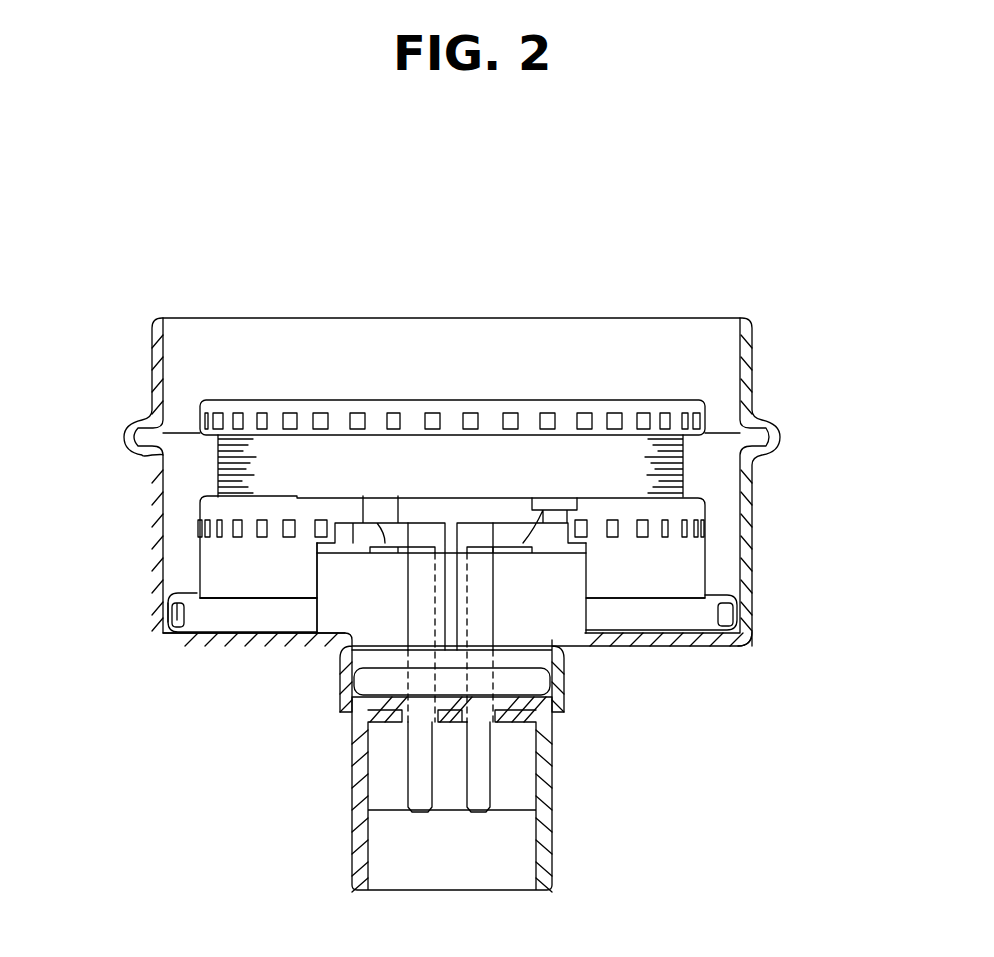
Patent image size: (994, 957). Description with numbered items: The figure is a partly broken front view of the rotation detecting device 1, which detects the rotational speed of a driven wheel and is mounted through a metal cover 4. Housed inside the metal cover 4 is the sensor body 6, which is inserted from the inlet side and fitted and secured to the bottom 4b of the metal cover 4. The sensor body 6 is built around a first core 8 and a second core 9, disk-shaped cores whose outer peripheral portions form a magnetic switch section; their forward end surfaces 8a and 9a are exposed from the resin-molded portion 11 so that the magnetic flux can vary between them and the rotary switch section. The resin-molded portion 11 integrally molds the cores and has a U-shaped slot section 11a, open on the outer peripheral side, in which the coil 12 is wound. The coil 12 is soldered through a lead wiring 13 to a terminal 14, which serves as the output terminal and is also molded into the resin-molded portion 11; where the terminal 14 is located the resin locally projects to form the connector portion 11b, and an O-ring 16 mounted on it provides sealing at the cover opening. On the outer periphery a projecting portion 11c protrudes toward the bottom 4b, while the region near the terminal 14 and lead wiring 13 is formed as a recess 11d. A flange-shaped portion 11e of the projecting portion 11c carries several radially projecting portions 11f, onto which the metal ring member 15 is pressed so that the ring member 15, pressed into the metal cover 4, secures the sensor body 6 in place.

The rotation detecting device 1 is at (790, 350).
The metal cover 4 is at (753, 386).
The bottom of the metal cover 4b is at (290, 647).
The sensor body 6 is at (188, 512).
The first core 8 is at (648, 405).
The forward end surface of the first core 8a is at (614, 413).
The second core 9 is at (718, 600).
The forward end surface of the second core 9a is at (654, 550).
The resin-molded portion 11 is at (346, 804).
The slot section 11a is at (703, 492).
The connector portion 11b is at (547, 842).
The projecting portion 11c is at (232, 590).
The recess 11d is at (317, 577).
The flange-shaped portion 11e is at (195, 625).
The projecting portions 11f is at (177, 612).
The coil 12 is at (684, 462).
The lead wiring 13 is at (532, 527).
The terminal 14 is at (483, 775).
The ring member 15 is at (725, 582).
The O-ring 16 is at (540, 682).